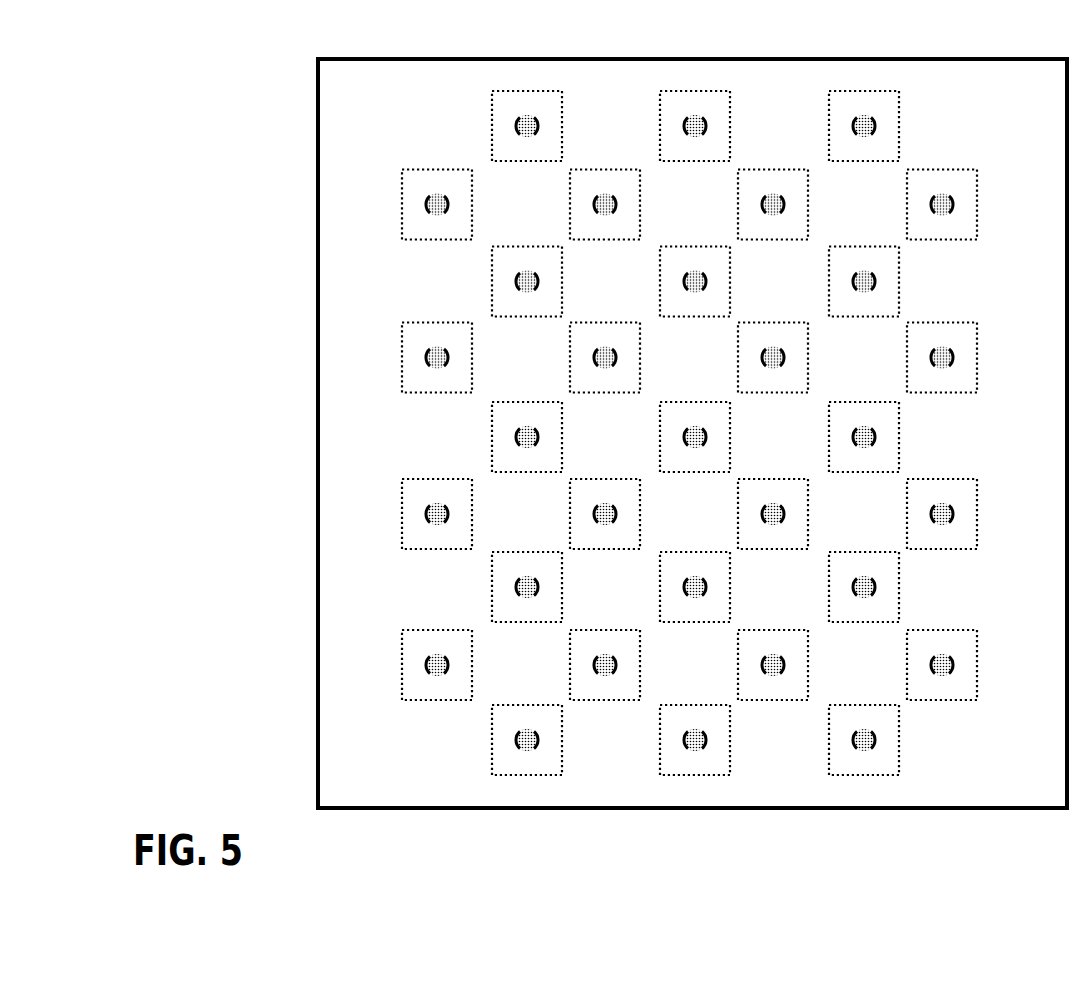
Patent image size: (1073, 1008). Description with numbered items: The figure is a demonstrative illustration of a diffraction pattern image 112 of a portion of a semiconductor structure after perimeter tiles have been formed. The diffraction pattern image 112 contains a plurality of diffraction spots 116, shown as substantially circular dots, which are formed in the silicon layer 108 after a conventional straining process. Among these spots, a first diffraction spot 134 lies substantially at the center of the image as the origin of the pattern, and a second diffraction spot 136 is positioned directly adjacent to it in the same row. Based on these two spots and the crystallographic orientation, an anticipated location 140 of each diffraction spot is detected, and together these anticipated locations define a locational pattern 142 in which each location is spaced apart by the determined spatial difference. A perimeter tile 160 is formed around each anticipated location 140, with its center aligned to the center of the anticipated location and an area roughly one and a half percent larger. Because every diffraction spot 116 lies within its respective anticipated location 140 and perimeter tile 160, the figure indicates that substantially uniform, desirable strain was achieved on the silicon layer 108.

The diffraction pattern image 112 is at (627, 421).
The silicon layer 108 is at (340, 213).
The diffraction spots 116 is at (951, 149).
The perimeter tile 160 is at (560, 290).
The first diffraction spot 134 is at (685, 437).
The second diffraction spot 136 is at (875, 438).
The anticipated location 140 is at (447, 665).
The locational pattern 142 is at (386, 361).